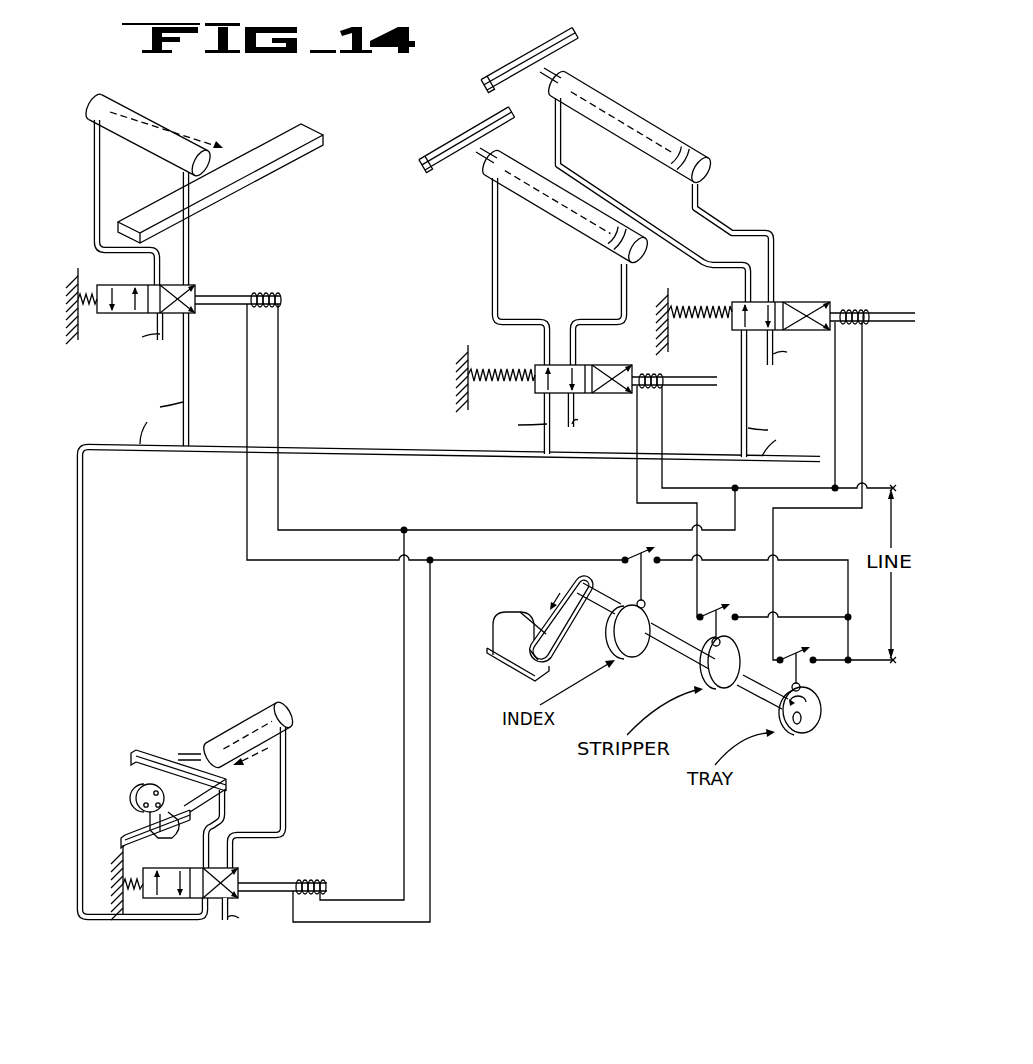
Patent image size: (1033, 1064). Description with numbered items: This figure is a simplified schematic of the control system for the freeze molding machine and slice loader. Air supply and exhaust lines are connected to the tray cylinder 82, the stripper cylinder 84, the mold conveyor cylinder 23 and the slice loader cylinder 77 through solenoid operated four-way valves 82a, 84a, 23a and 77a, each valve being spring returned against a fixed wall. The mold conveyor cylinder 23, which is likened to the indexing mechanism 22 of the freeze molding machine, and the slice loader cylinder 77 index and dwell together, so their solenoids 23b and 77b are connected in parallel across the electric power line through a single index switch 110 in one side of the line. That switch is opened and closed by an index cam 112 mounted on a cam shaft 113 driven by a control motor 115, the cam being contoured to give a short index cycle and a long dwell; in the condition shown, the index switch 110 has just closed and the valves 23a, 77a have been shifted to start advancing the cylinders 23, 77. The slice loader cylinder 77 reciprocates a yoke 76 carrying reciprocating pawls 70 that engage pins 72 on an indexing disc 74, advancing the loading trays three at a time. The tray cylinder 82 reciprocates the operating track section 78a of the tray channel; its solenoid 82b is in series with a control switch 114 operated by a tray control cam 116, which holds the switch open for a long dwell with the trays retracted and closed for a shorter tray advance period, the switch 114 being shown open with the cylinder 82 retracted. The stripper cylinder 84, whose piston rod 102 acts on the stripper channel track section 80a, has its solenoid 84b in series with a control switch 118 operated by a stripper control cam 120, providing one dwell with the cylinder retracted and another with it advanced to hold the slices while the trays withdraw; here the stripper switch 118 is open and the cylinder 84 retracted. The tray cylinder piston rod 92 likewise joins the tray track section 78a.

The indexing mechanism 22 is at (188, 211).
The mold conveyor cylinder 23 is at (178, 96).
The solenoid operated four-way valve 23a is at (195, 286).
The solenoid 23b is at (280, 297).
The reciprocating pawls 70 is at (163, 836).
The pins 72 is at (138, 801).
The indexing disc 74 is at (148, 788).
The yoke 76 is at (176, 748).
The slice loader cylinder 77 is at (248, 712).
The solenoid operated four-way valve 77a is at (238, 870).
The solenoid 77b is at (324, 884).
The operating track section 78a is at (583, 34).
The operating channel track section 80a is at (443, 146).
The tray cylinder 82 is at (675, 74).
The solenoid operated four-way valve 82a is at (790, 302).
The solenoid 82b is at (855, 310).
The stripper cylinder 84 is at (524, 208).
The solenoid operated four-way valve 84a is at (535, 366).
The solenoid 84b is at (655, 374).
The tray cylinder piston rod 92 is at (548, 72).
The stripper cylinder piston rod 102 is at (478, 160).
The index switch 110 is at (646, 559).
The index cam 112 is at (645, 648).
The cam shaft 113 is at (607, 610).
The control switch 114 is at (800, 652).
The control motor 115 is at (492, 627).
The tray control cam 116 is at (822, 720).
The control switch 118 is at (722, 608).
The stripper control cam 120 is at (714, 684).